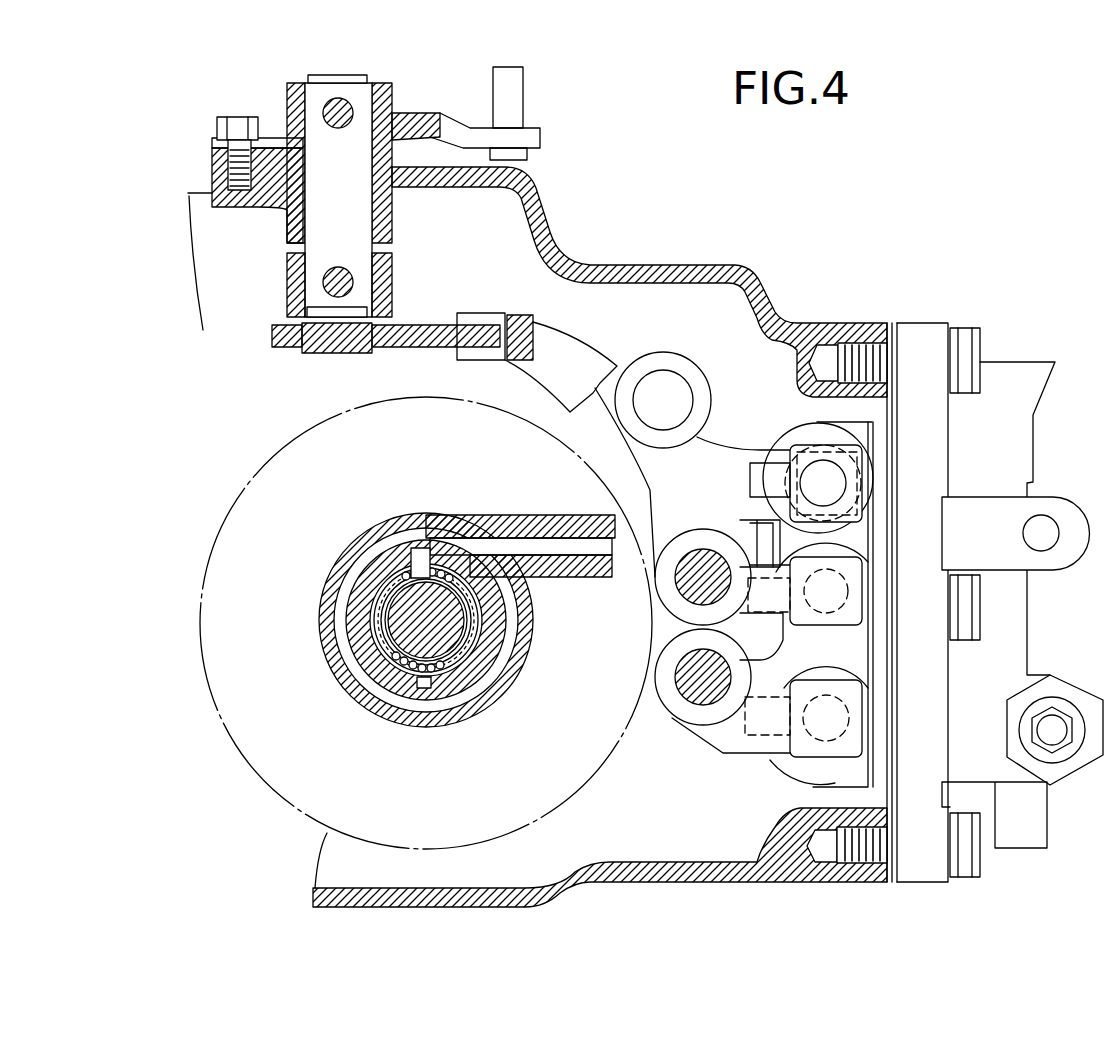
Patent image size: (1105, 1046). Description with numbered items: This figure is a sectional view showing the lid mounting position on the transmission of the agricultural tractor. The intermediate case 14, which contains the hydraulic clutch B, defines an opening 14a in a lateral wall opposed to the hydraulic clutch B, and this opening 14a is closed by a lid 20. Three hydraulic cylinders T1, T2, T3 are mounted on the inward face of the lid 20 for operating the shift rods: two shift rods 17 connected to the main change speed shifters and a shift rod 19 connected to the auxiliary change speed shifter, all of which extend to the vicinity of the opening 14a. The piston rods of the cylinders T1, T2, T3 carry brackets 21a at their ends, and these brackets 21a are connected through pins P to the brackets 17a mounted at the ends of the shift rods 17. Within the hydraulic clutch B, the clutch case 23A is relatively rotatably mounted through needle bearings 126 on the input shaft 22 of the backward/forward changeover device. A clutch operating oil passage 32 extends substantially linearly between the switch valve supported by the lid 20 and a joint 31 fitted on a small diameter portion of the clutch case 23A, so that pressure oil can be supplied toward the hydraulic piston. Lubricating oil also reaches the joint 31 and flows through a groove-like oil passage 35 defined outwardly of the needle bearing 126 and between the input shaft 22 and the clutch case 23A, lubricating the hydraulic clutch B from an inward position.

The intermediate case 14 is at (650, 265).
The opening 14a is at (883, 797).
The shift rods 17 is at (689, 596).
The brackets 17a is at (657, 588).
The shift rod 19 is at (660, 386).
The lid 20 is at (934, 880).
The brackets 21a is at (810, 440).
The input shaft 22 is at (348, 685).
The clutch case 23A is at (380, 567).
The joint 31 is at (317, 617).
The clutch operating oil passage 32 is at (545, 547).
The oil passage 35 is at (425, 690).
The needle bearings 126 is at (408, 578).
The hydraulic clutch B is at (262, 460).
The pins P is at (750, 480).
The hydraulic cylinder T1 is at (818, 766).
The hydraulic cylinder T2 is at (830, 552).
The hydraulic cylinder T3 is at (853, 462).